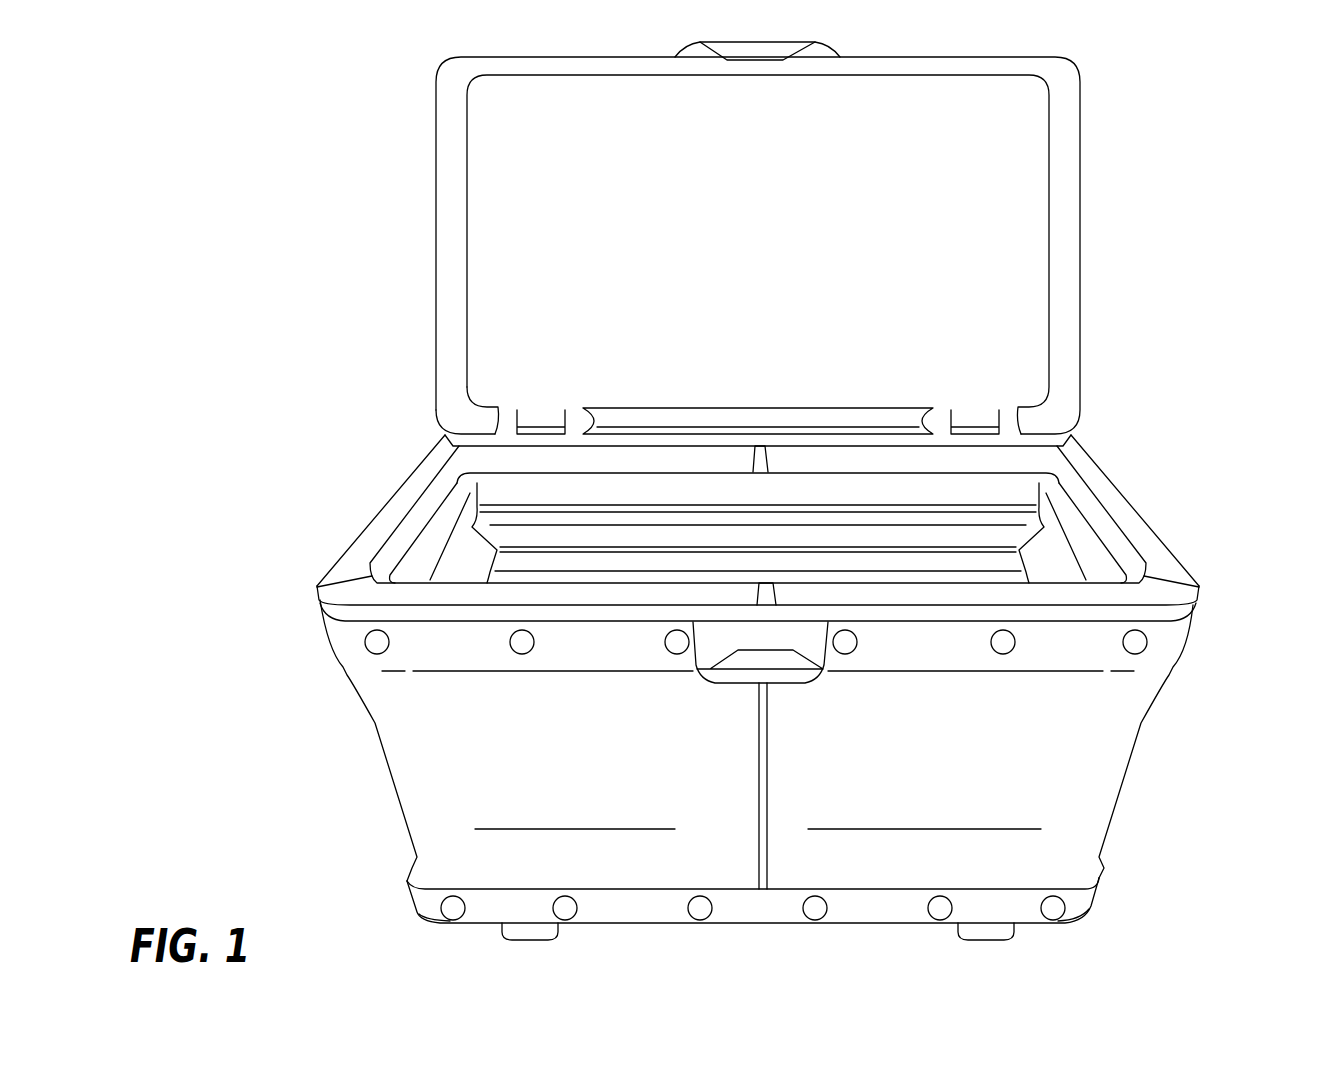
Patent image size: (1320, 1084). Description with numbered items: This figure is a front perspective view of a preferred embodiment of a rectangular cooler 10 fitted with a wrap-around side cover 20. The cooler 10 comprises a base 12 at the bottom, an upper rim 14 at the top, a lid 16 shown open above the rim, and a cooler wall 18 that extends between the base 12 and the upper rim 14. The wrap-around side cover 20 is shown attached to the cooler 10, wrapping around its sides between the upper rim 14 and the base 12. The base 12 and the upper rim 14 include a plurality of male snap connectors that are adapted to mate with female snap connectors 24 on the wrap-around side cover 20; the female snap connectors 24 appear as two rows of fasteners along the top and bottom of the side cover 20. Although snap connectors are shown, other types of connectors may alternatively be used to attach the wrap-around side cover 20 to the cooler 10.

The cooler 10 is at (402, 336).
The base 12 is at (1078, 925).
The upper rim 14 is at (1176, 613).
The lid 16 is at (960, 240).
The cooler wall 18 is at (437, 553).
The wrap-around side cover 20 is at (348, 745).
The female snap connectors 24 is at (377, 642).